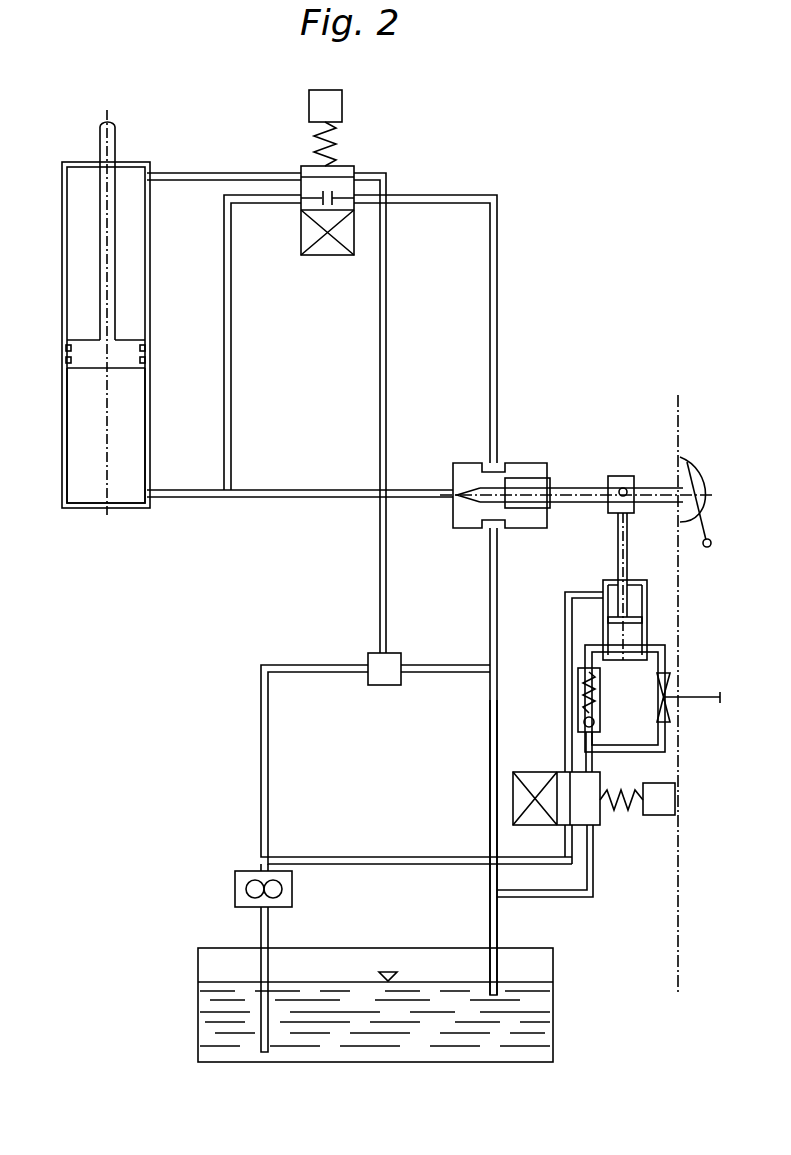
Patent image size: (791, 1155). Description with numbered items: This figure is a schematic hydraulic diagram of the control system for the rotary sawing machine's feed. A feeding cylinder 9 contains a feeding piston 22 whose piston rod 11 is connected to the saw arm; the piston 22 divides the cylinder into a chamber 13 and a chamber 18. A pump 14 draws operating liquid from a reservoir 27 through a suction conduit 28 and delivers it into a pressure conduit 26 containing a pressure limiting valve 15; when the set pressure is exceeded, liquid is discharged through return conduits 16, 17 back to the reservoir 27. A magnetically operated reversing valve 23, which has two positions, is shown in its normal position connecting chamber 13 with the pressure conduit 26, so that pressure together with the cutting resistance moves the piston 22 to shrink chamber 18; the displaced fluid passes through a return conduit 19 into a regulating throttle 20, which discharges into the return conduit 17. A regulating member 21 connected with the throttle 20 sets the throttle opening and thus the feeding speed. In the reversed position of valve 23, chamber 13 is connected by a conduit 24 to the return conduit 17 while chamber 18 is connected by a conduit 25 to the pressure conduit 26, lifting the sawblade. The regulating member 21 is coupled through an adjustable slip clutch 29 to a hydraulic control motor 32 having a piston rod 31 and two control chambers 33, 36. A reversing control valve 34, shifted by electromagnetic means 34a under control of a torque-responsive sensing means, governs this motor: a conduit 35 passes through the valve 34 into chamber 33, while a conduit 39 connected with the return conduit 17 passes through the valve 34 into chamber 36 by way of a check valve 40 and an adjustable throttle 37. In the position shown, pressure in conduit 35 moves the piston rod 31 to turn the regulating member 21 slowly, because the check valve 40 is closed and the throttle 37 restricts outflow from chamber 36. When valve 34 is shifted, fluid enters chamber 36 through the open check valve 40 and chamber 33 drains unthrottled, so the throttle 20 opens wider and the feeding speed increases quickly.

The feeding cylinder 9 is at (101, 509).
The piston rod 11 is at (108, 142).
The cylinder chamber 13 is at (137, 188).
The pump 14 is at (235, 887).
The pressure limiting valve 15 is at (378, 660).
The return conduit 16 is at (438, 666).
The return conduit 17 is at (490, 782).
The cylinder chamber 18 is at (84, 500).
The return conduit 19 is at (313, 490).
The regulating throttle 20 is at (462, 468).
The regulating member 21 is at (693, 480).
The feeding piston 22 is at (88, 347).
The reversing valve 23 is at (322, 182).
The conduit 24 is at (438, 198).
The conduit 25 is at (224, 288).
The pressure conduit 26 is at (387, 398).
The reservoir 27 is at (212, 1052).
The suction conduit 28 is at (262, 956).
The adjustable slip clutch 29 is at (622, 477).
The piston rod 31 is at (627, 540).
The hydraulic control motor 32 is at (662, 598).
The control chamber 33 is at (612, 583).
The reversing control valve 34 is at (585, 814).
The electromagnetic means 34a is at (676, 800).
The conduit 35 is at (568, 595).
The control chamber 36 is at (636, 632).
The adjustable throttle 37 is at (670, 678).
The conduit 39 is at (565, 896).
The check valve 40 is at (580, 696).